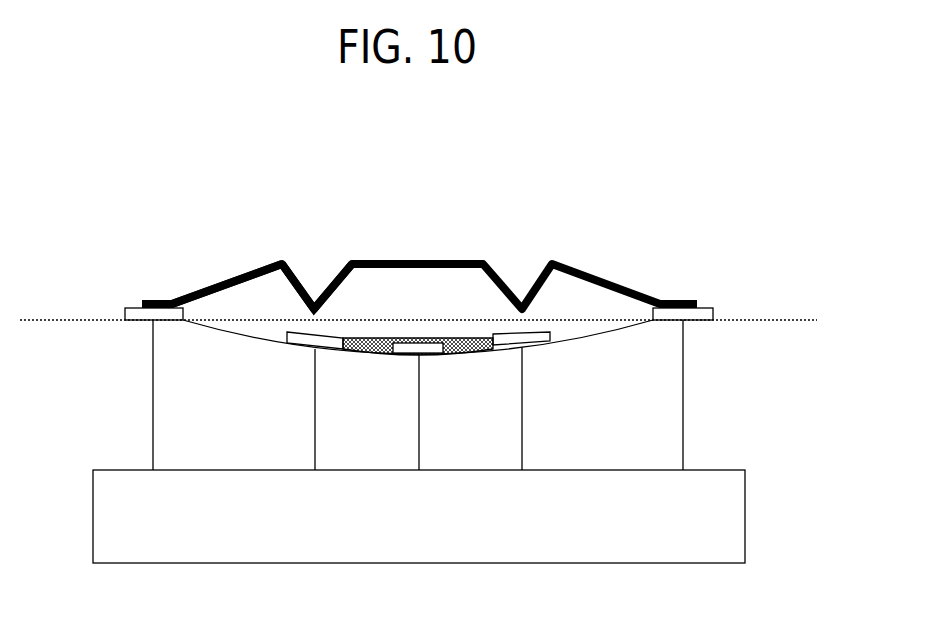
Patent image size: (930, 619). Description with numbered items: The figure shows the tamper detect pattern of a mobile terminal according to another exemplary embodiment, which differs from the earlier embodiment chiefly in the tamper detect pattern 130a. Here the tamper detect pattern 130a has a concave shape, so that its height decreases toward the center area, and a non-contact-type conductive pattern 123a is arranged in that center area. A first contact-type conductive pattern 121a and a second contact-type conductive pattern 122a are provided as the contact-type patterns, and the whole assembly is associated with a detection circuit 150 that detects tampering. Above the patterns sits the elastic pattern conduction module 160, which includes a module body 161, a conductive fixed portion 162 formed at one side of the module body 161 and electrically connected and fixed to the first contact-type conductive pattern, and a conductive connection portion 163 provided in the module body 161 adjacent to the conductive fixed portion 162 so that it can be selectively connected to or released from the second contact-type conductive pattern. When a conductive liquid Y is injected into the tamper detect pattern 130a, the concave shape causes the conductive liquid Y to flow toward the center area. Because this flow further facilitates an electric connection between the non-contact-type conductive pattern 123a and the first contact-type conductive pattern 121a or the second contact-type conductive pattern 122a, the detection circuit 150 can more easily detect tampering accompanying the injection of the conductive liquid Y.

The detection circuit 150 is at (419, 516).
The tamper detect pattern 130a is at (592, 342).
The first contact-type conductive pattern 121a is at (707, 308).
The second contact-type conductive pattern 122a is at (520, 338).
The non-contact-type conductive pattern 123a is at (409, 352).
The conductive liquid Y is at (462, 342).
The elastic pattern conduction module 160 is at (412, 222).
The module body 161 is at (243, 272).
The conductive fixed portion 162 is at (159, 302).
The conductive connection portion 163 is at (305, 323).